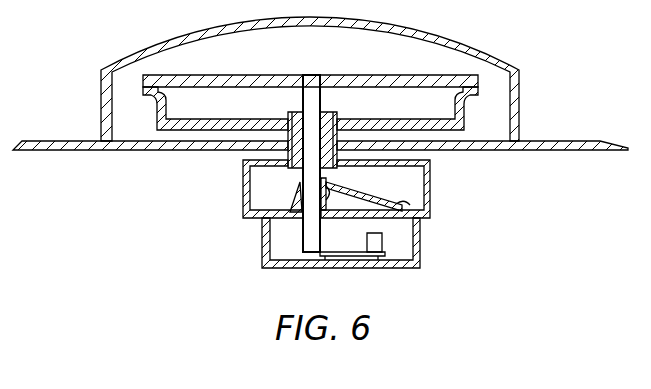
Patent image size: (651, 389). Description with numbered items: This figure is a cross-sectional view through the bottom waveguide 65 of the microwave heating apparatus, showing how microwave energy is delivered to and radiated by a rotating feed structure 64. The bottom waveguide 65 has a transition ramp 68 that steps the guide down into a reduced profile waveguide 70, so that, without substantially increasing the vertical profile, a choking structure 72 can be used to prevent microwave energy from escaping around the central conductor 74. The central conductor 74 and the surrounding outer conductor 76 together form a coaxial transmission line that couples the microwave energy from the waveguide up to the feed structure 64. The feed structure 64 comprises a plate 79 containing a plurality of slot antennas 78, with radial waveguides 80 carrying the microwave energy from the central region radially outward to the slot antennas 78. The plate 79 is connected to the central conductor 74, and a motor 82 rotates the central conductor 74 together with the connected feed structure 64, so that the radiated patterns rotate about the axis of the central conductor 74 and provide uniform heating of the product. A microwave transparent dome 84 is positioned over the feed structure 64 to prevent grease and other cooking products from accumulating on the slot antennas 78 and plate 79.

The feed structure 64 is at (310, 82).
The bottom waveguide 65 is at (430, 172).
The transition ramp 68 is at (425, 200).
The reduced profile waveguide 70 is at (333, 180).
The choking structure 72 is at (327, 212).
The central conductor 74 is at (298, 184).
The outer conductor 76 is at (283, 133).
The slot antennas 78 is at (202, 75).
The plate 79 is at (312, 75).
The radial waveguides 80 is at (238, 114).
The motor 82 is at (384, 242).
The microwave transparent dome 84 is at (467, 43).